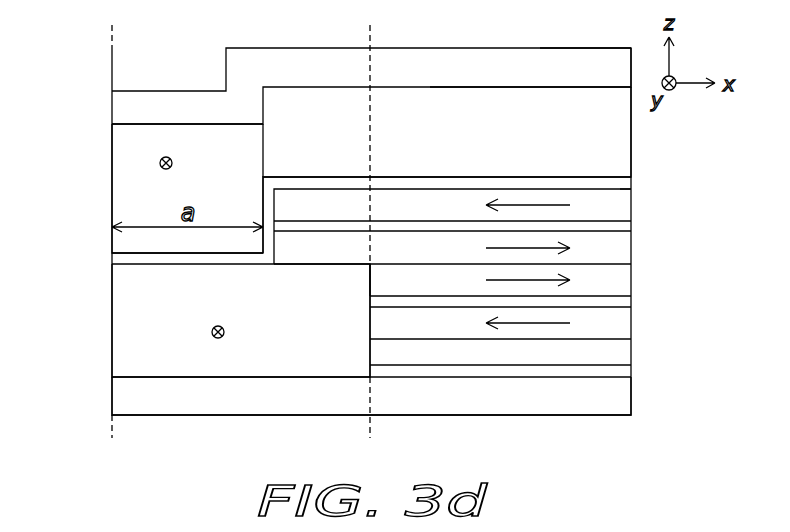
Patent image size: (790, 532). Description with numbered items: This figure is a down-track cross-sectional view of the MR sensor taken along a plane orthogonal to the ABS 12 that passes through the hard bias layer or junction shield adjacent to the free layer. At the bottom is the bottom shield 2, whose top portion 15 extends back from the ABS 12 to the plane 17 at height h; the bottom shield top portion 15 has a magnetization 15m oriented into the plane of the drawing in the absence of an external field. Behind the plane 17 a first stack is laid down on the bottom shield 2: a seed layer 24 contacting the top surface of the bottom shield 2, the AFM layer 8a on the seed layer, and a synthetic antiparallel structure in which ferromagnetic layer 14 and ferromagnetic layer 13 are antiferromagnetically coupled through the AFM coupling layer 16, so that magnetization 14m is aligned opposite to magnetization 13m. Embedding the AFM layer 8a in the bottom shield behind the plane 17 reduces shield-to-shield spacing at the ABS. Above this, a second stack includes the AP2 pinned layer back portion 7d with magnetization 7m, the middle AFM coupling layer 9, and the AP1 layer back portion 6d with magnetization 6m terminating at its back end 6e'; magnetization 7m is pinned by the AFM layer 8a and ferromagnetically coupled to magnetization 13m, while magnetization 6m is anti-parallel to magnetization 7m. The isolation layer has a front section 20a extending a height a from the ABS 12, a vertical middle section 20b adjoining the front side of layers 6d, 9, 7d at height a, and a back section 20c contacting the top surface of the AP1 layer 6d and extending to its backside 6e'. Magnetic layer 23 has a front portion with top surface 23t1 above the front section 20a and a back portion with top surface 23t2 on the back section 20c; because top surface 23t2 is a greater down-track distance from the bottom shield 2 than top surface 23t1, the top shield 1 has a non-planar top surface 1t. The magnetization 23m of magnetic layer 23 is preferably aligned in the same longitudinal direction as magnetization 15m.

The ABS 12 is at (110, 233).
The plane 17- 17 is at (370, 233).
The top shield 1 is at (128, 103).
The top surface 1t is at (563, 48).
The top surface 23t1 is at (177, 124).
The top surface 23t2 is at (477, 87).
The vertical middle section 20b is at (258, 177).
The magnetic layer 23 is at (128, 150).
The magnetization 23m is at (185, 164).
The front section 20a is at (122, 257).
The back section 20c is at (575, 177).
The back end 6e' is at (655, 177).
The back portion 6d is at (614, 198).
The magnetization 6m is at (511, 207).
The AFM coupling layer 9 is at (614, 225).
The magnetization 7m is at (511, 249).
The back portion 7d is at (614, 247).
The magnetization 13m is at (505, 282).
The ferromagnetic layer 13 is at (614, 272).
The AFM coupling layer 16 is at (614, 298).
The magnetization 14m is at (505, 325).
The ferromagnetic layer 14 is at (614, 322).
The AFM layer 8a is at (614, 352).
The seed layer 24 is at (614, 369).
The bottom shield 2 is at (614, 397).
The bottom shield top portion 15 is at (122, 322).
The magnetization 15m is at (239, 334).